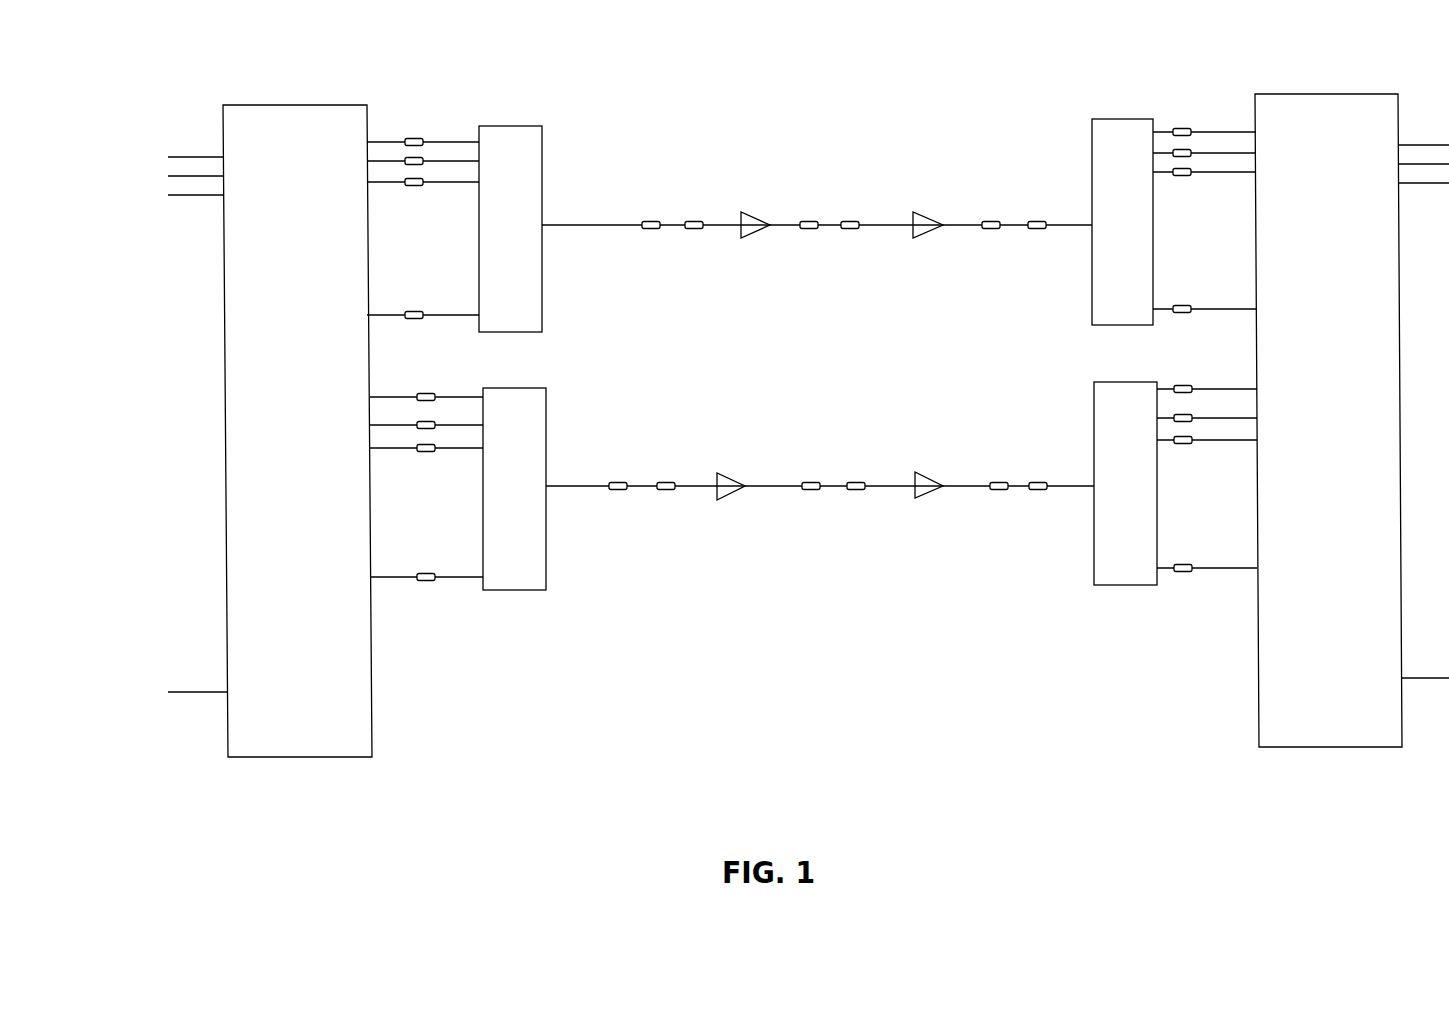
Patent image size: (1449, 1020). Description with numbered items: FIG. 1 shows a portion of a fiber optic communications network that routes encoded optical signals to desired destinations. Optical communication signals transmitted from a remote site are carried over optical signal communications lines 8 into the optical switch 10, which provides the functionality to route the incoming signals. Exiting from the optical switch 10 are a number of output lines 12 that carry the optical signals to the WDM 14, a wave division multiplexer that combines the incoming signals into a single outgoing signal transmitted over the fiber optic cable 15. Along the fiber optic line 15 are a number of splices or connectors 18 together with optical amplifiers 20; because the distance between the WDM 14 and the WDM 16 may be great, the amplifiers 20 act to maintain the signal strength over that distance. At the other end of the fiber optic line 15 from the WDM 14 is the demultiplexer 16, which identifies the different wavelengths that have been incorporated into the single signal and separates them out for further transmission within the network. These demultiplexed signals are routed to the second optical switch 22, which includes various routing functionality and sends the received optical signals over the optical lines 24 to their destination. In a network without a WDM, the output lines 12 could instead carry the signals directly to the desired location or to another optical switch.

The optical signal communications lines 8 is at (223, 157).
The optical switch 10 is at (302, 757).
The output lines 12 is at (423, 315).
The WDM 14 is at (543, 163).
The fiber optic cable 15 is at (715, 225).
The demultiplexer 16 is at (1119, 119).
The splices or connectors 18 is at (405, 315).
The optical amplifiers 20 is at (742, 212).
The second optical switch 22 is at (1283, 747).
The optical lines 24 is at (1400, 145).